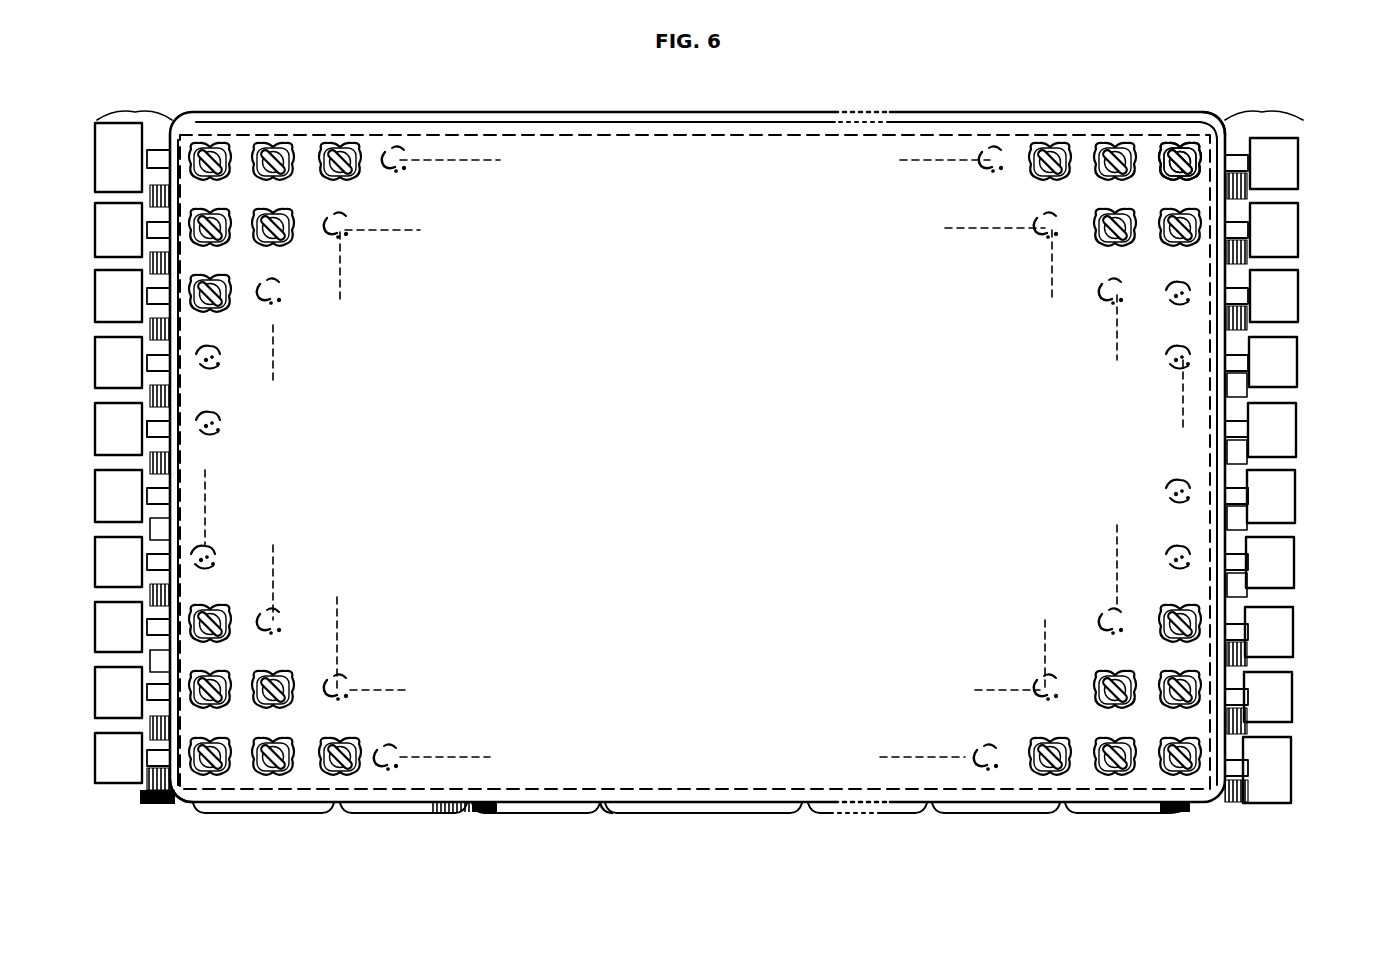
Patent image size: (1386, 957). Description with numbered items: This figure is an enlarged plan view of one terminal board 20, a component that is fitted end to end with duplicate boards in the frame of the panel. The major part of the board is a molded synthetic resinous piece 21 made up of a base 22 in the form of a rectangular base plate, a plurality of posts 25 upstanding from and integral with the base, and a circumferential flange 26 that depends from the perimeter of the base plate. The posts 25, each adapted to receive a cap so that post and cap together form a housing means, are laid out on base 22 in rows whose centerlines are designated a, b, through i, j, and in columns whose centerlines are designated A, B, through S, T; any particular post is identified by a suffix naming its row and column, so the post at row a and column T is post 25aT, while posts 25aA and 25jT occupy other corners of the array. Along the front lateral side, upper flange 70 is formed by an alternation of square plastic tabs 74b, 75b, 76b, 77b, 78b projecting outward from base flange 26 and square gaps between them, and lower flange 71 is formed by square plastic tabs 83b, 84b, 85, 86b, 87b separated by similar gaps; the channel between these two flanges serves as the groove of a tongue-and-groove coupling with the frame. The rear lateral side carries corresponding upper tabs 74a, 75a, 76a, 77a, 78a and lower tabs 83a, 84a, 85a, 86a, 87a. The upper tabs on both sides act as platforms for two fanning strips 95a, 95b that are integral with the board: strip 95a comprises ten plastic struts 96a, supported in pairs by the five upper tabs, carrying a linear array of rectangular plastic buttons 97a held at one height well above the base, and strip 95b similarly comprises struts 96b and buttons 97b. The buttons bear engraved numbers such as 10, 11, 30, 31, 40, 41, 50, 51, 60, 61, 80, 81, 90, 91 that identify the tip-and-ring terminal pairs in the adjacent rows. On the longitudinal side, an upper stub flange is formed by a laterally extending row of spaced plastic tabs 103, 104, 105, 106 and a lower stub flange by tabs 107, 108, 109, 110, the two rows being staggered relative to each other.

The terminal board 20 is at (697, 481).
The molded synthetic resinous piece 21 is at (216, 500).
The base 22 is at (180, 806).
The posts 25 is at (1110, 775).
The post at row a, column A 25aA is at (193, 136).
The post at row a, column T 25aT is at (1174, 145).
The post at row j, column T 25jT is at (1180, 779).
The circumferential flange 26 is at (614, 805).
The fanning strip 95a is at (136, 110).
The fanning strip 95b is at (1262, 108).
The square plastic tab 74a is at (156, 197).
The square plastic tab 74b is at (1246, 200).
The square plastic tab 75a is at (154, 329).
The square plastic tab 75b is at (1246, 330).
The square plastic tab 76a is at (154, 464).
The square plastic tab 76b is at (1246, 465).
The square plastic tab 77a is at (154, 596).
The square plastic tab 77b is at (1246, 597).
The square plastic tab 78a is at (154, 729).
The square plastic tab 78b is at (1246, 730).
The square plastic tab 83a is at (154, 264).
The square plastic tab 83b is at (1246, 265).
The square plastic tab 84a is at (154, 397).
The square plastic tab 84b is at (1246, 398).
The square plastic tab 85a is at (154, 529).
The square plastic tab 85 is at (1246, 530).
The square plastic tab 86a is at (154, 662).
The square plastic tab 86b is at (1246, 663).
The square plastic tab 87a is at (143, 798).
The square plastic tab 87b is at (1233, 804).
The rectangular plastic buttons 97a is at (95, 562).
The rectangular plastic buttons 97b is at (1331, 631).
The plastic struts 96a is at (166, 497).
The plastic struts 96b is at (1228, 496).
The plastic tab 103 is at (402, 812).
The plastic tab 104 is at (754, 819).
The plastic tab 105 is at (904, 819).
The plastic tab 106 is at (1077, 817).
The plastic tab 107 is at (303, 812).
The plastic tab 108 is at (532, 813).
The plastic tab 109 is at (827, 819).
The plastic tab 110 is at (987, 817).
The row centerline a is at (910, 162).
The row centerline b is at (965, 238).
The column centerline A is at (210, 472).
The column centerline B is at (278, 347).
The row centerline i is at (409, 689).
The row centerline j is at (460, 756).
The column centerline T is at (1182, 422).
The column centerline S is at (1108, 556).
The pad 10 is at (1274, 163).
The pad 11 is at (118, 230).
The pad 30 is at (1274, 296).
The pad 31 is at (118, 362).
The pad 40 is at (1273, 362).
The pad 41 is at (118, 429).
The pad 50 is at (1272, 430).
The pad 51 is at (118, 496).
The pad 60 is at (1271, 496).
The pad 61 is at (118, 562).
The upper flange 70 is at (1270, 562).
The lower flange 71 is at (118, 627).
The pad 80 is at (1269, 632).
The pad 81 is at (118, 692).
The pad 90 is at (1268, 697).
The pad 91 is at (118, 758).